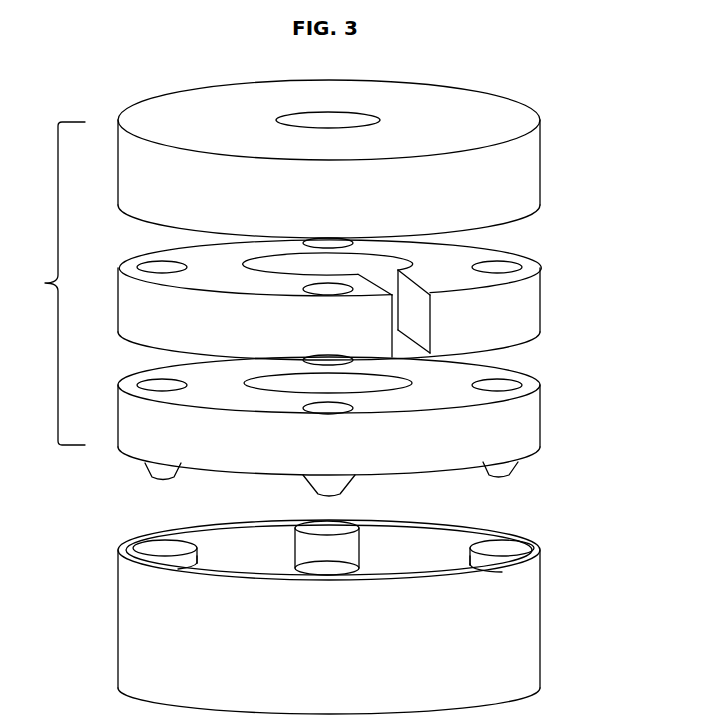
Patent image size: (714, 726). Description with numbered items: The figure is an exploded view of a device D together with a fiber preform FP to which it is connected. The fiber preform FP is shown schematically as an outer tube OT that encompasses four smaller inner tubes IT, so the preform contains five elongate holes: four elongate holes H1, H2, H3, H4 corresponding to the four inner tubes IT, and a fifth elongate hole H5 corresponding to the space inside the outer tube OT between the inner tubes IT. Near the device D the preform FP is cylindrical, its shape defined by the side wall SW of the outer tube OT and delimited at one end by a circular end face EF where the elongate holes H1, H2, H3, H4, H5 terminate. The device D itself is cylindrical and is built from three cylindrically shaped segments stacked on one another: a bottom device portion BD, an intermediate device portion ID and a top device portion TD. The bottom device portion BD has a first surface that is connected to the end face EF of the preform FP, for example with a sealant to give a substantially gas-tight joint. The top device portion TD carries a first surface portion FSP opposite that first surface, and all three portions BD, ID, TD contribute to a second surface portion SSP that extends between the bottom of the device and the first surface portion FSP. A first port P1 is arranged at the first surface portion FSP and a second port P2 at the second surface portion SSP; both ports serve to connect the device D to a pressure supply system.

The device D is at (43, 283).
The top device portion TD is at (127, 172).
The intermediate device portion ID is at (128, 305).
The bottom device portion BD is at (123, 418).
The first surface portion FSP is at (478, 113).
The second surface portion SSP is at (518, 177).
The first port P1 is at (315, 122).
The second port P2 is at (412, 329).
The end face EF is at (471, 515).
The outer tube OT is at (540, 594).
The fiber preform FP is at (523, 640).
The side wall SW is at (155, 635).
The elongate hole H1 is at (158, 550).
The elongate hole H2 is at (323, 530).
The elongate hole H3 is at (509, 545).
The elongate hole H4 is at (327, 567).
The elongate hole H5 is at (238, 543).
The inner tube IT is at (183, 562).